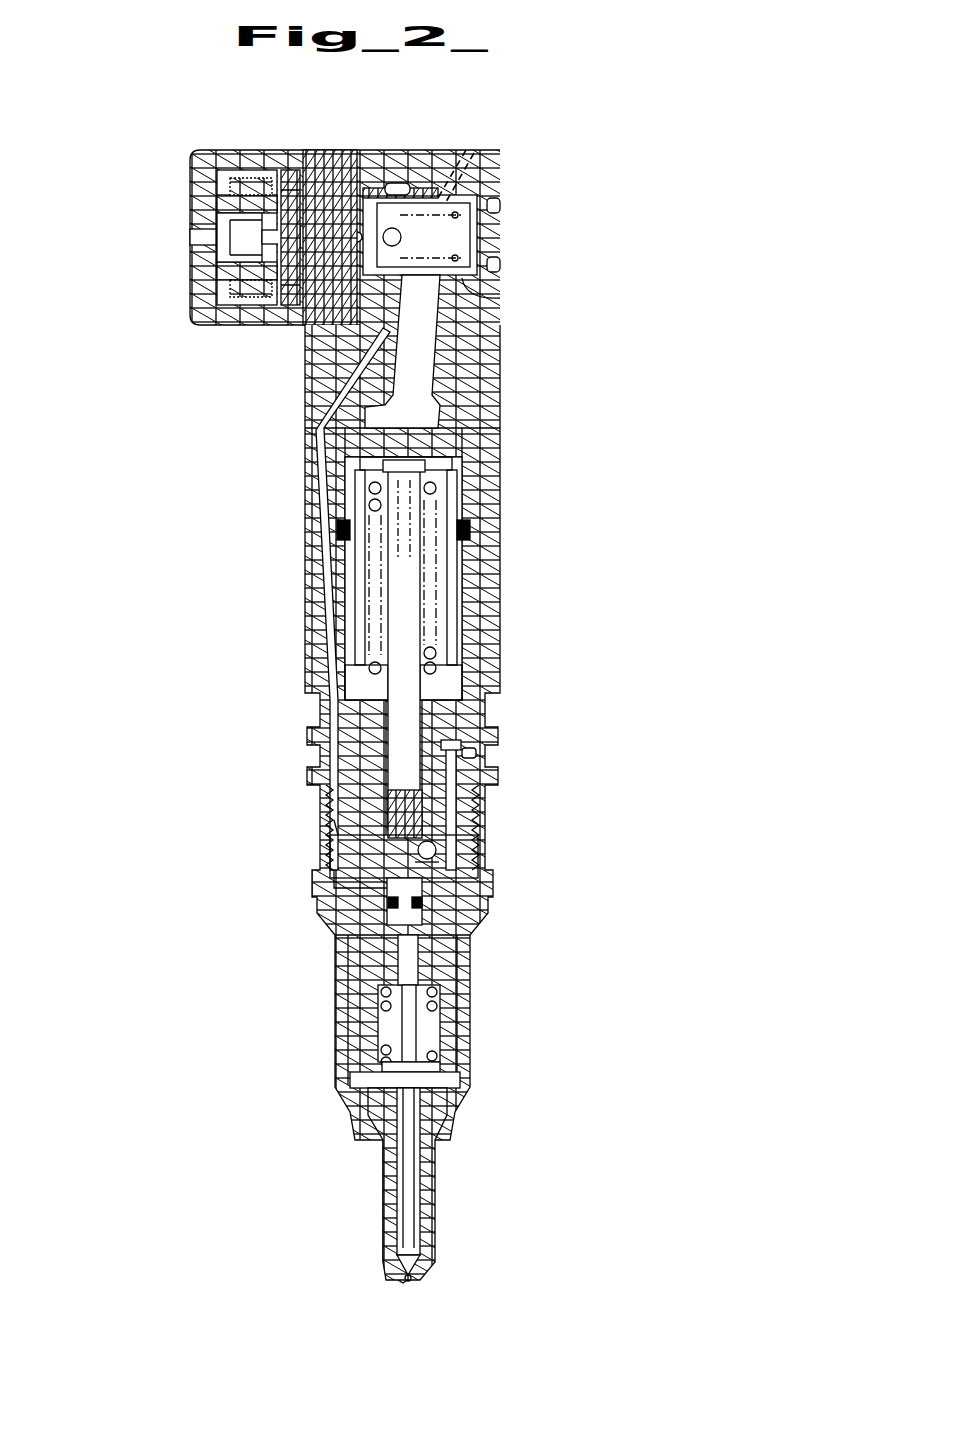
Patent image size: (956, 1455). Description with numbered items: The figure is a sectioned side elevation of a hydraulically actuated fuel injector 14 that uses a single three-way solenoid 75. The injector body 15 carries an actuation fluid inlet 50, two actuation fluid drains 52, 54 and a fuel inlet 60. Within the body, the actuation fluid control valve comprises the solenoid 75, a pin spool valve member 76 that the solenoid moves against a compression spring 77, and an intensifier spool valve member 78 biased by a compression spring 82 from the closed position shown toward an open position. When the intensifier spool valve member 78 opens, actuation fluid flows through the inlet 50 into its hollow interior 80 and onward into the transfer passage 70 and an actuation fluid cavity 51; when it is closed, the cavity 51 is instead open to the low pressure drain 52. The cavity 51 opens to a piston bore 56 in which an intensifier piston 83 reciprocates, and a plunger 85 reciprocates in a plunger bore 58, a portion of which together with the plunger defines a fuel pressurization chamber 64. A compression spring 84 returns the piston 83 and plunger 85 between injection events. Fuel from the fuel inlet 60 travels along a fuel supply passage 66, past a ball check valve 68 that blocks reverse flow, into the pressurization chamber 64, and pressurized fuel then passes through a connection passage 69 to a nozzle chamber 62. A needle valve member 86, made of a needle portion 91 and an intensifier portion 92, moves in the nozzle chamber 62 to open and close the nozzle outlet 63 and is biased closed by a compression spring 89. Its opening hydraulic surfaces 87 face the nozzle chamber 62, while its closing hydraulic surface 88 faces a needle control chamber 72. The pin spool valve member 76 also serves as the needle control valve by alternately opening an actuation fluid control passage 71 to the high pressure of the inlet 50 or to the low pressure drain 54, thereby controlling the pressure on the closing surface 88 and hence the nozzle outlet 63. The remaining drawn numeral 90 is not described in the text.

The fuel injector 14 is at (178, 455).
The injector body 15 is at (305, 580).
The actuation fluid inlet 50 is at (500, 240).
The actuation fluid cavity 51 is at (440, 335).
The actuation fluid drain 52 is at (465, 142).
The actuation fluid drain 54 is at (338, 215).
The piston bore 56 is at (452, 488).
The plunger bore 58 is at (410, 705).
The fuel inlet 60 is at (470, 750).
The nozzle chamber 62 is at (455, 1082).
The nozzle outlet 63 is at (412, 1280).
The fuel pressurization chamber 64 is at (445, 783).
The fuel supply passage 66 is at (490, 820).
The ball check valve 68 is at (470, 845).
The connection passage 69 is at (490, 906).
The transfer passage 70 is at (393, 186).
The actuation fluid control passage 71 is at (325, 400).
The needle control chamber 72 is at (330, 814).
The three-way solenoid 75 is at (215, 326).
The pin spool valve member 76 is at (323, 150).
The compression spring 77 is at (215, 237).
The intensifier spool valve member 78 is at (500, 298).
The hollow interior 80 is at (414, 200).
The compression spring 82 is at (456, 236).
The intensifier piston 83 is at (460, 440).
The compression spring 84 is at (440, 612).
The plunger 85 is at (440, 568).
The needle valve member 86 is at (425, 1150).
The opening hydraulic surfaces 87 is at (400, 1268).
The closing hydraulic surface 88 is at (470, 868).
The compression spring 89 is at (440, 1013).
The nozzle holder 90 is at (460, 952).
The needle portion 91 is at (395, 1010).
The intensifier portion 92 is at (330, 890).